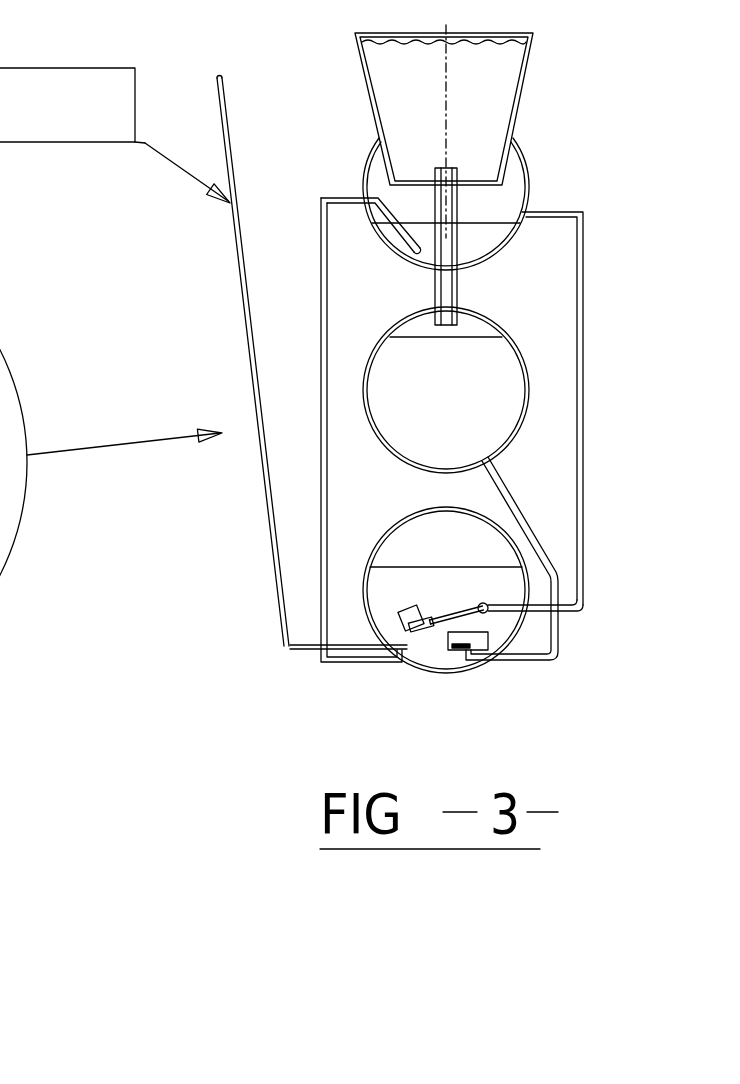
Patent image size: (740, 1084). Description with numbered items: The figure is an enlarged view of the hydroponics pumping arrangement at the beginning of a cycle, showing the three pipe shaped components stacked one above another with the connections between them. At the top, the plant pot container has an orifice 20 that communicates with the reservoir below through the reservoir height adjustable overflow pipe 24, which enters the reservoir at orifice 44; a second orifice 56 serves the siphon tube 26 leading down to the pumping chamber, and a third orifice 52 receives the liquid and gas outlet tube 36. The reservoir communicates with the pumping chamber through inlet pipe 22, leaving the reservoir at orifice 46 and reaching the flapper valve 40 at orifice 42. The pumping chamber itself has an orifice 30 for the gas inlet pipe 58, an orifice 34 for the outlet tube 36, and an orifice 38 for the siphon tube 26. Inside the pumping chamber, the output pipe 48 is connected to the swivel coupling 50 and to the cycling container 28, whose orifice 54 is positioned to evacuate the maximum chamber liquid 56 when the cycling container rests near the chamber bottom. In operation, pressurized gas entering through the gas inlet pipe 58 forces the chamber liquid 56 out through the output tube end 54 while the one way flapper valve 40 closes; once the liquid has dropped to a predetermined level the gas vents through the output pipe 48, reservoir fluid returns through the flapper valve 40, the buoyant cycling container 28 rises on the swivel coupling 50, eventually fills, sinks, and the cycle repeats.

The orifice 20 is at (457, 267).
The inlet pipe 22 is at (548, 548).
The overflow pipe 24 is at (457, 288).
The siphon tube 26 is at (321, 265).
The cycling container 28 is at (410, 607).
The orifice 30 is at (387, 647).
The orifice 34 is at (532, 602).
The outlet tube 36 is at (588, 432).
The orifice 38 is at (407, 662).
The flapper valve 40 is at (457, 649).
The orifice 42 is at (490, 660).
The orifice 44 is at (457, 310).
The orifice 46 is at (512, 440).
The output pipe 48 is at (470, 612).
The swivel coupling 50 is at (488, 611).
The orifice 52 is at (525, 207).
The orifice 54 is at (406, 618).
The chamber liquid 56 is at (366, 195).
The gas inlet pipe 58 is at (238, 330).